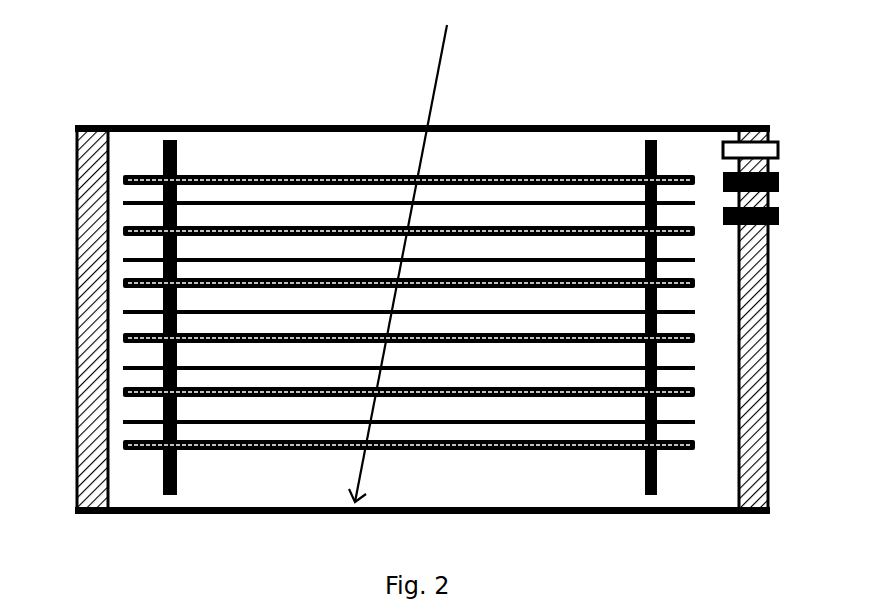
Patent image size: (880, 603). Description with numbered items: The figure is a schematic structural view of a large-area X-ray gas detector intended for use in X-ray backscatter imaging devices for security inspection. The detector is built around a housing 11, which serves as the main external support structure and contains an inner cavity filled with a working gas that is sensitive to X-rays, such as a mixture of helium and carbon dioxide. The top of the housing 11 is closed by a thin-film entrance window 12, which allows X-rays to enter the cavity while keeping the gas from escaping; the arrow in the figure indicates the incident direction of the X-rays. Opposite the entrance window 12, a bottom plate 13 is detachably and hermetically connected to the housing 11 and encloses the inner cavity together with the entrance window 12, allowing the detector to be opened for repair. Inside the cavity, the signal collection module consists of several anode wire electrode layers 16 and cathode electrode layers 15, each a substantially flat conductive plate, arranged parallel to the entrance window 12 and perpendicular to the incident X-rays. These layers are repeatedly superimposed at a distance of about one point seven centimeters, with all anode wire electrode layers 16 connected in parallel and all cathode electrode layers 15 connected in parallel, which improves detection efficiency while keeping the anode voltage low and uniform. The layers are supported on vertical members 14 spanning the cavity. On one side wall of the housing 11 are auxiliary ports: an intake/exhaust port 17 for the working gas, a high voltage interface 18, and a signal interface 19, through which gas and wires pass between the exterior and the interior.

The housing 11 is at (76, 182).
The entrance window 12 is at (133, 125).
The bottom plate 13 is at (135, 513).
The support bars 14 is at (172, 140).
The cathode electrode layer 15 is at (266, 175).
The anode wire electrode layer 16 is at (347, 203).
The intake/exhaust port 17 is at (722, 150).
The high voltage interface 18 is at (780, 180).
The signal interface 19 is at (780, 210).